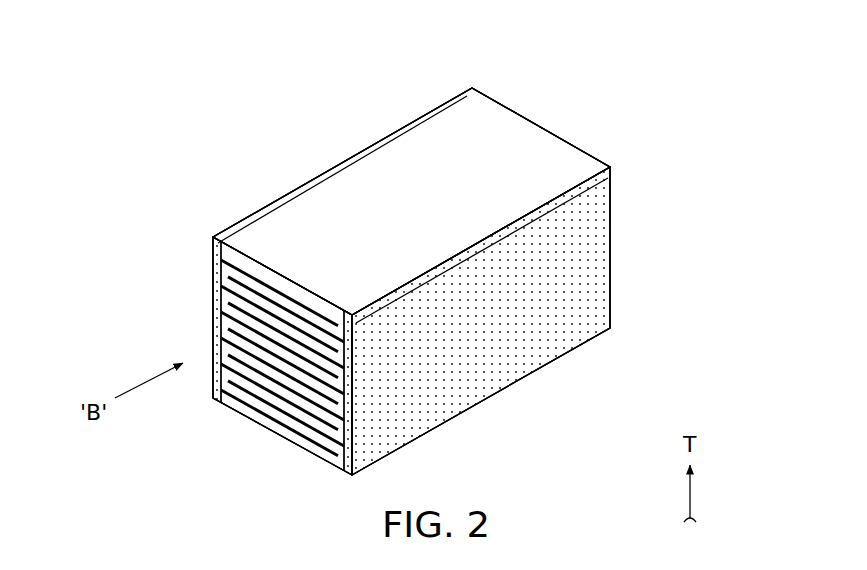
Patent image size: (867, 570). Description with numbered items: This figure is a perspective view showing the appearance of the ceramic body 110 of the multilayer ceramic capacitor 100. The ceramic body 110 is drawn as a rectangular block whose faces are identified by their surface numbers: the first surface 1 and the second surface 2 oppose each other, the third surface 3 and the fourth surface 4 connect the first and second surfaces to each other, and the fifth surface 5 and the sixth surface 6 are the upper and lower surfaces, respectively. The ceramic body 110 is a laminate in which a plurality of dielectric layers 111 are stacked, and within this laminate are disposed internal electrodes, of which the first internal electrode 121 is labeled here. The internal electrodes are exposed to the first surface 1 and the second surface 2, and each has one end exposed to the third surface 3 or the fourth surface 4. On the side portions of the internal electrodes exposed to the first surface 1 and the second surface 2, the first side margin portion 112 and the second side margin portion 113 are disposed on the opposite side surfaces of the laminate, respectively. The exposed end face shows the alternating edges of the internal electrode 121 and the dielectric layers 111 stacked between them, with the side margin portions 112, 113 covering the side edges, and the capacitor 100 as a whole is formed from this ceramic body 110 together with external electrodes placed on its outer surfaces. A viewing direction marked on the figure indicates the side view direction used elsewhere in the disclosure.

The multilayer ceramic capacitor 100 is at (242, 43).
The ceramic body 110 is at (365, 185).
The dielectric layer 111 is at (218, 315).
The first internal electrode 121 is at (228, 293).
The first side margin portion 112 is at (307, 187).
The second side margin portion 113 is at (570, 183).
The first surface 1 is at (274, 237).
The second surface 2 is at (562, 284).
The third surface 3 is at (279, 392).
The fourth surface 4 is at (541, 162).
The fifth surface 5 is at (432, 150).
The sixth surface 6 is at (496, 364).